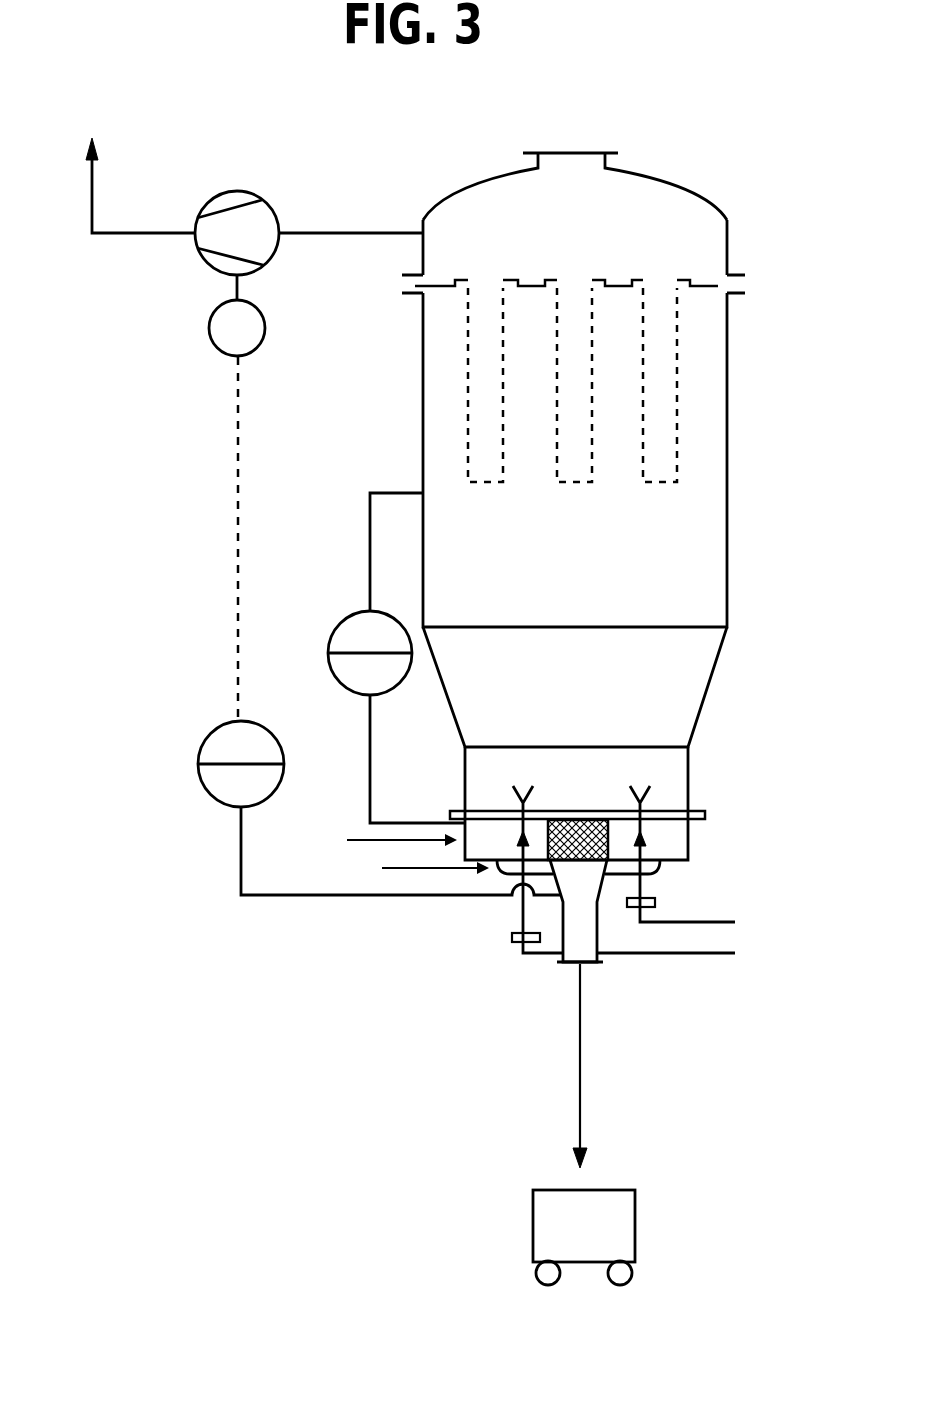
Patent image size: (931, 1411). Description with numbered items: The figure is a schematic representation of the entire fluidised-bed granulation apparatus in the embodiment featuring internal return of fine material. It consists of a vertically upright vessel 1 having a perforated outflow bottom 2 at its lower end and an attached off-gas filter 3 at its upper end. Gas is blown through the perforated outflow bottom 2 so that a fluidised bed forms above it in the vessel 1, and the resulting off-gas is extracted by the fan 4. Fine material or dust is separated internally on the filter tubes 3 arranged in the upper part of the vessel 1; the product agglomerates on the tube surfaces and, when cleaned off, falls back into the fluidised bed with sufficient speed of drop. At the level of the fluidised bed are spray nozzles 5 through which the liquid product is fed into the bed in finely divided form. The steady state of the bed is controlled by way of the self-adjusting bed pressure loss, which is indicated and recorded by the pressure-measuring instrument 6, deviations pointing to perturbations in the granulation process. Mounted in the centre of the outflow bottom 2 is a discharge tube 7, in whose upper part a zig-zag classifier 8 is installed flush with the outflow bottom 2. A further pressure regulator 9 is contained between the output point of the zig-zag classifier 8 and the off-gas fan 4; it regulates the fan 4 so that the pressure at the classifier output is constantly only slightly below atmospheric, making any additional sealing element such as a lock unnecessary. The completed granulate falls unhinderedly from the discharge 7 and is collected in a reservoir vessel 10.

The vessel 1 is at (730, 540).
The perforated outflow bottom 2 is at (673, 812).
The off-gas filter 3 is at (675, 390).
The fan 4 is at (231, 192).
The spray nozzles 5 is at (645, 790).
The pressure-measuring instrument 6 is at (357, 611).
The discharge tube 7 is at (572, 965).
The zig-zag classifier 8 is at (608, 833).
The pressure regulator 9 is at (218, 727).
The reservoir vessel 10 is at (545, 1218).